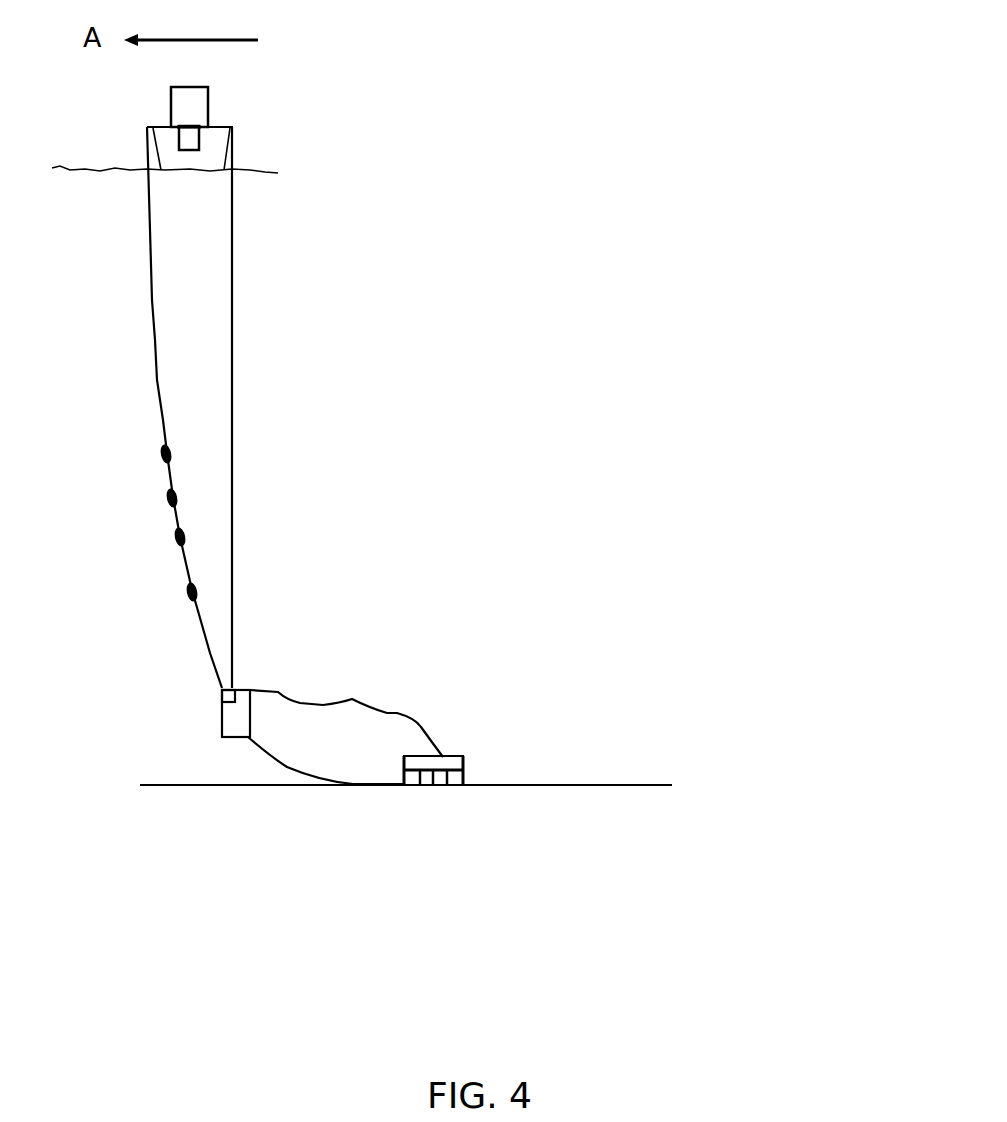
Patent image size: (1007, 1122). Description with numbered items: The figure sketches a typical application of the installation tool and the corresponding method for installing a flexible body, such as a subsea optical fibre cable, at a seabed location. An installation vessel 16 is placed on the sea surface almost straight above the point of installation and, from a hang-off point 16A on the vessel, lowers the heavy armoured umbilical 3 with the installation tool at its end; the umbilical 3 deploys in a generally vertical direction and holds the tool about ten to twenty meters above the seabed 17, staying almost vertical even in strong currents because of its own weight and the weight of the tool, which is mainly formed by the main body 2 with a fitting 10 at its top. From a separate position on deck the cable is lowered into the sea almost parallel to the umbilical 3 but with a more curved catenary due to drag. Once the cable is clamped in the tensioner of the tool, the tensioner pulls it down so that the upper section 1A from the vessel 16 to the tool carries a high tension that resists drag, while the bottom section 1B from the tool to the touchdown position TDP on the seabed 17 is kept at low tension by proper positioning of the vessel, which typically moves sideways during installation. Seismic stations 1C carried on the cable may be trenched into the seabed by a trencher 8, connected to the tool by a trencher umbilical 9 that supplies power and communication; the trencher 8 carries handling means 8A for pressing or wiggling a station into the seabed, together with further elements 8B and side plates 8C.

The upper section of the cable 1A is at (156, 377).
The bottom section of the cable 1B is at (288, 767).
The seismic stations 1C is at (164, 456).
The main body 2 is at (222, 717).
The umbilical 3 is at (233, 400).
The trencher 8 is at (441, 785).
The handling means 8A is at (442, 785).
The anchor element 8B is at (430, 785).
The anchor side plates 8C is at (518, 757).
The trencher umbilical 9 is at (353, 698).
The tether attachment 10 is at (222, 692).
The installation vessel 16 is at (208, 108).
The hang-off 16A is at (199, 138).
The seabed 17 is at (593, 788).
The touchdown position TDP is at (388, 785).